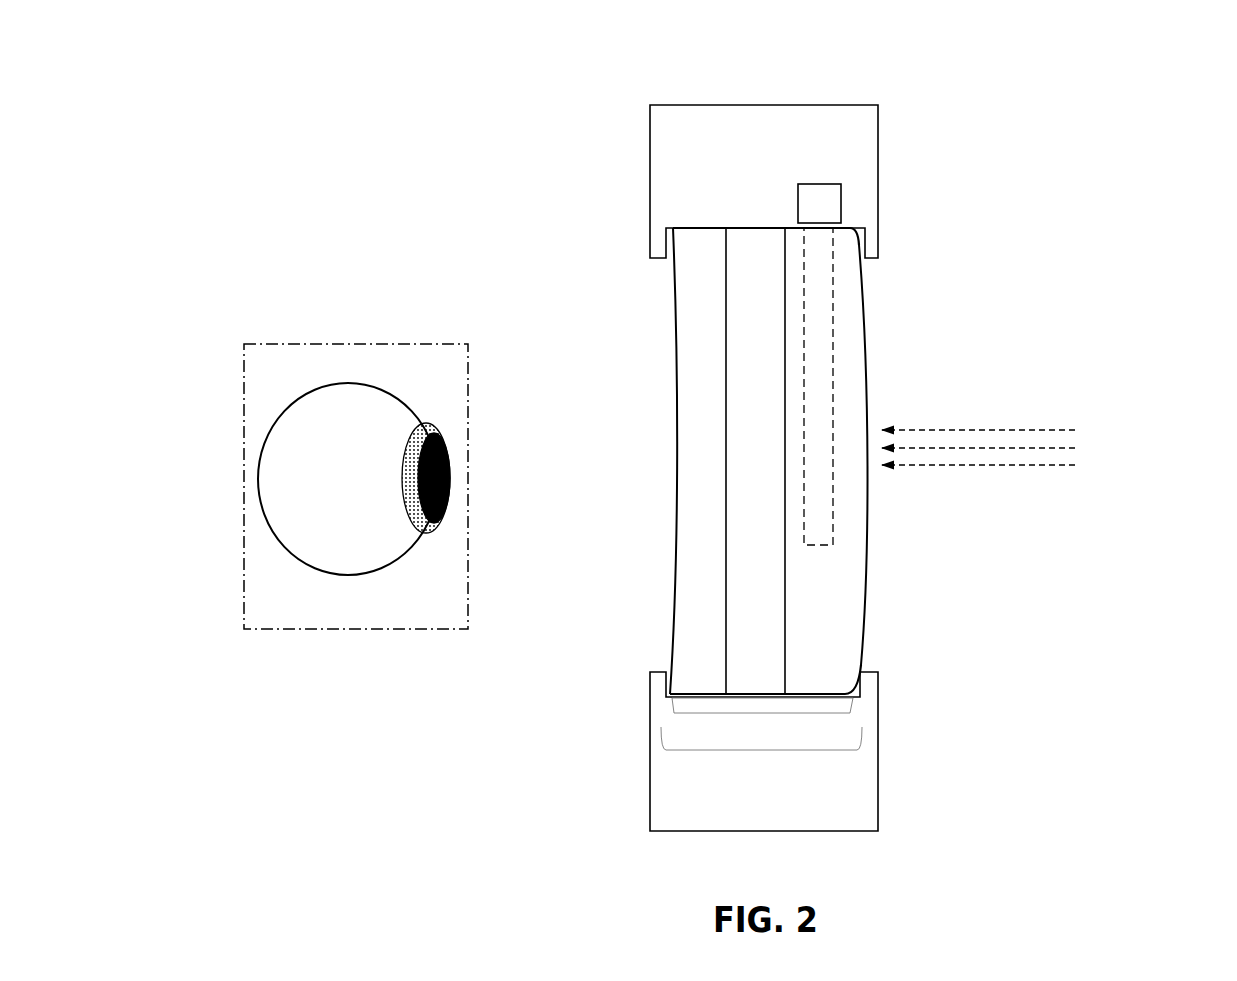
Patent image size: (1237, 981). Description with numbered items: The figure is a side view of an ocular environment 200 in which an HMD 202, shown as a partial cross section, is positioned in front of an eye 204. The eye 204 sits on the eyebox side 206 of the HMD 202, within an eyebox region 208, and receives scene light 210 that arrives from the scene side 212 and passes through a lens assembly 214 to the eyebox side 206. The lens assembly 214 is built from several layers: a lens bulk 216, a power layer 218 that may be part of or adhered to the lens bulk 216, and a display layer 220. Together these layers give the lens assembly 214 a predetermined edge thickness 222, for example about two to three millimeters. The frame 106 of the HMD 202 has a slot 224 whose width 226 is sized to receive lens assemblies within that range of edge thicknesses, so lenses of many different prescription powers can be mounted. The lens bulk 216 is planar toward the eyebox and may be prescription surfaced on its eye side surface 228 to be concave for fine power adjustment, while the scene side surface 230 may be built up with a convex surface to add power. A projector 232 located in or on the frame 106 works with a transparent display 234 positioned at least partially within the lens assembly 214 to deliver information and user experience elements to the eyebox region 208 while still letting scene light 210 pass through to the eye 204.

The ocular environment 200 is at (788, 40).
The HMD 202 is at (952, 102).
The frame 106 is at (778, 141).
The eye 204 is at (341, 481).
The eyebox side 206 is at (484, 268).
The eyebox region 208 is at (349, 629).
The scene light 210 is at (1030, 445).
The scene side 212 is at (1007, 279).
The lens assembly 214 is at (676, 541).
The lens bulk 216 is at (711, 678).
The power layer 218 is at (770, 678).
The display layer 220 is at (832, 678).
The edge thickness 222 is at (762, 713).
The slot 224 is at (666, 267).
The width 226 is at (762, 750).
The eye side surface 228 is at (674, 418).
The scene side surface 230 is at (870, 489).
The projector 232 is at (841, 204).
The display 234 is at (833, 287).